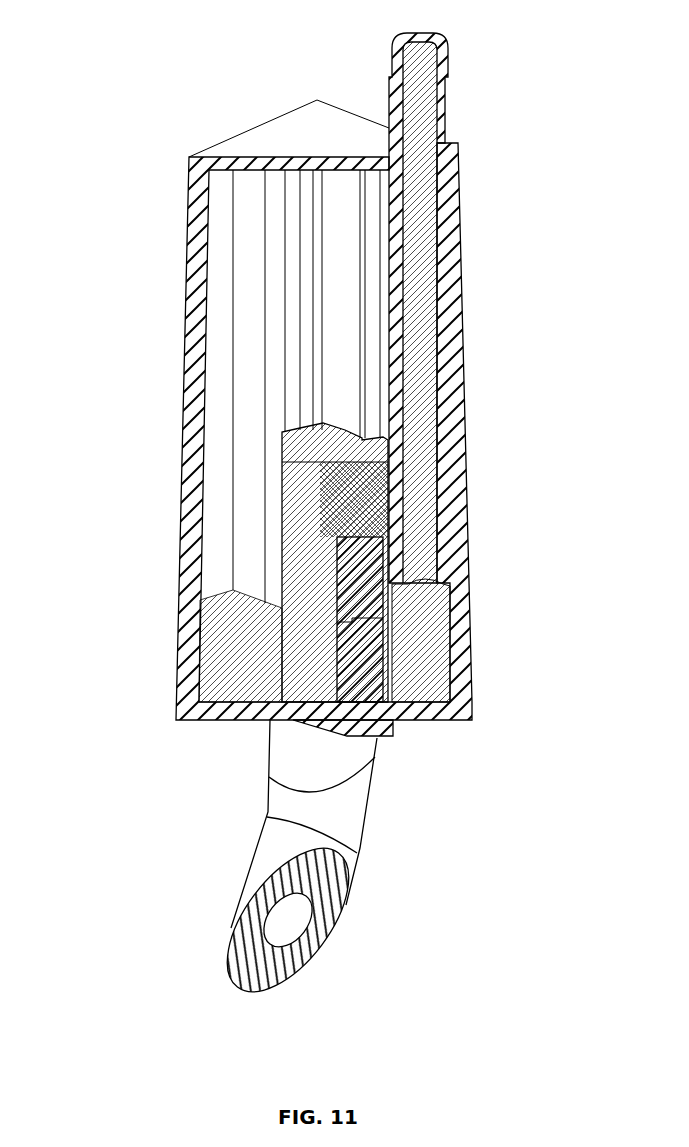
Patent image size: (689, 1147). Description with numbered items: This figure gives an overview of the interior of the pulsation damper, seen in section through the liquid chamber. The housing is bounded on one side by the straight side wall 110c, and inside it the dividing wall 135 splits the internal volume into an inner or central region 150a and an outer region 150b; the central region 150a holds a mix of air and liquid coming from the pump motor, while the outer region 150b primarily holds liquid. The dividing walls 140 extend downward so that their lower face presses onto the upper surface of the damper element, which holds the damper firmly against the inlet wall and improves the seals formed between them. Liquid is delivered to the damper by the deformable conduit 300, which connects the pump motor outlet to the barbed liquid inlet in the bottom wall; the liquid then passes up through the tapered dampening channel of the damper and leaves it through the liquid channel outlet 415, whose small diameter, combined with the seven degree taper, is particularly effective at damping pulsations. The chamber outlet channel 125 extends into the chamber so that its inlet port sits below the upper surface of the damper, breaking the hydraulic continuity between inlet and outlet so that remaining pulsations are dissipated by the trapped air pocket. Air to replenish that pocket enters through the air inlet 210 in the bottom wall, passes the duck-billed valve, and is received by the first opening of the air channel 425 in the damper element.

The side wall 110c is at (223, 251).
The chamber outlet channel 125 is at (431, 523).
The dividing walls 140 is at (318, 232).
The central region 150a is at (312, 258).
The dividing wall 135 is at (263, 343).
The outer region 150b is at (213, 405).
The liquid channel outlet 415 is at (299, 503).
The air channel 425 is at (362, 518).
The air inlet 210 is at (369, 740).
The deformable conduit 300 is at (228, 853).